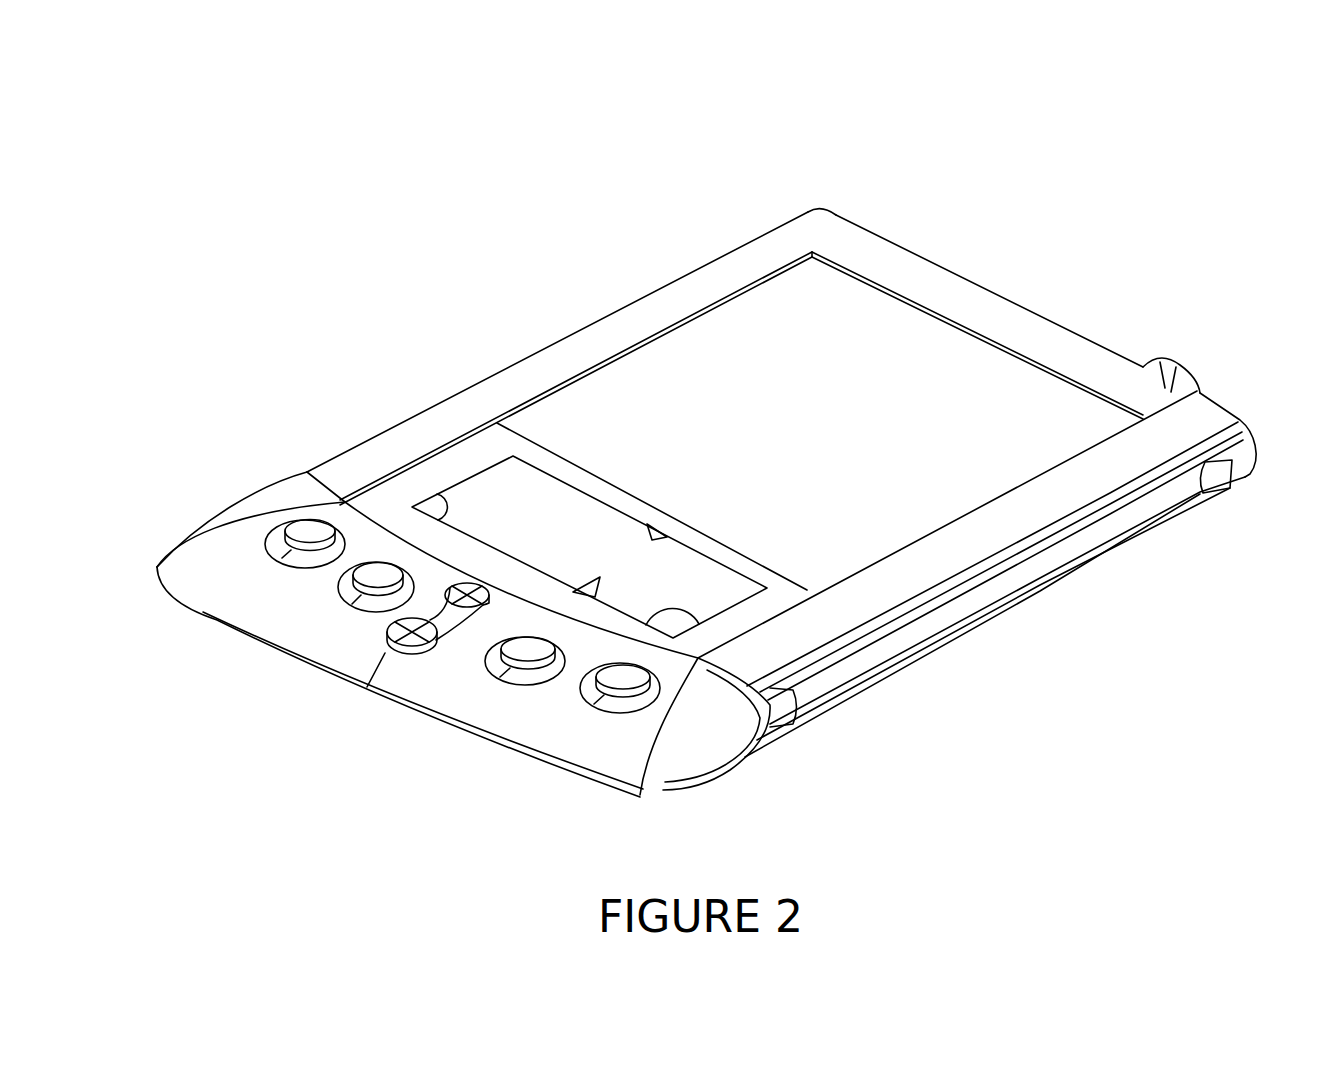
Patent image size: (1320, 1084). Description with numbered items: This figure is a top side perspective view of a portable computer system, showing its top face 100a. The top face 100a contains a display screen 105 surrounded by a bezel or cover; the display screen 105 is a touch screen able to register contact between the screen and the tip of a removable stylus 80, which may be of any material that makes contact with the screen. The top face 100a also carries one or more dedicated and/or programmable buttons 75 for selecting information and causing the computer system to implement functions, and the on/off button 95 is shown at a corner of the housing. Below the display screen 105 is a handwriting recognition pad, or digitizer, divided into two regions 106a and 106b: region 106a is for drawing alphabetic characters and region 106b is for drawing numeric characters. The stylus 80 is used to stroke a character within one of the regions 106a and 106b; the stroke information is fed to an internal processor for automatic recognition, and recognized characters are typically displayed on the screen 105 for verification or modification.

The top face 100a is at (190, 110).
The display screen 105 is at (806, 362).
The region for alphabetic characters 106a is at (549, 525).
The region for numeric characters 106b is at (697, 598).
The buttons 75 is at (303, 526).
The stylus 80 is at (1110, 530).
The on/off button 95 is at (1157, 367).